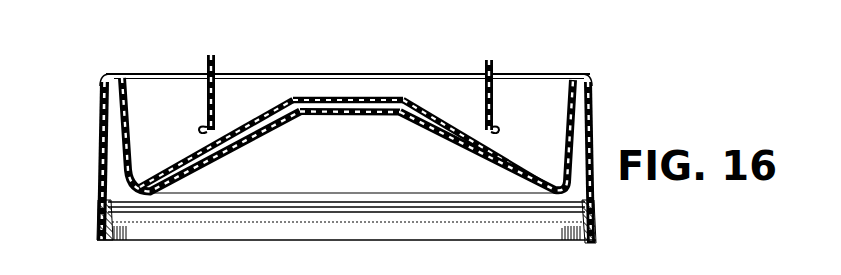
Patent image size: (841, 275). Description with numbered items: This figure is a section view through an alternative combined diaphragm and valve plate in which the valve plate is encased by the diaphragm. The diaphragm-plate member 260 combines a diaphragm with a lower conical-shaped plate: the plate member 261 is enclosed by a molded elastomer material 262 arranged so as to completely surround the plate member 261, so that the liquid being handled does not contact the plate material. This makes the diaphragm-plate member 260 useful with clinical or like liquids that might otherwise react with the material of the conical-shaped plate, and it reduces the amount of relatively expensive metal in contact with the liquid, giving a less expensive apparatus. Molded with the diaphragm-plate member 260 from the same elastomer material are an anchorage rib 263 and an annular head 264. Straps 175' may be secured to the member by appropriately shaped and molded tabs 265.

The straps 175' is at (350, 79).
The diaphragm-plate member 260 is at (604, 90).
The plate member 261 is at (405, 100).
The molded elastomer material 262 is at (130, 133).
The anchorage rib 263 is at (100, 208).
The annular head 264 is at (128, 240).
The tabs 265 is at (199, 128).